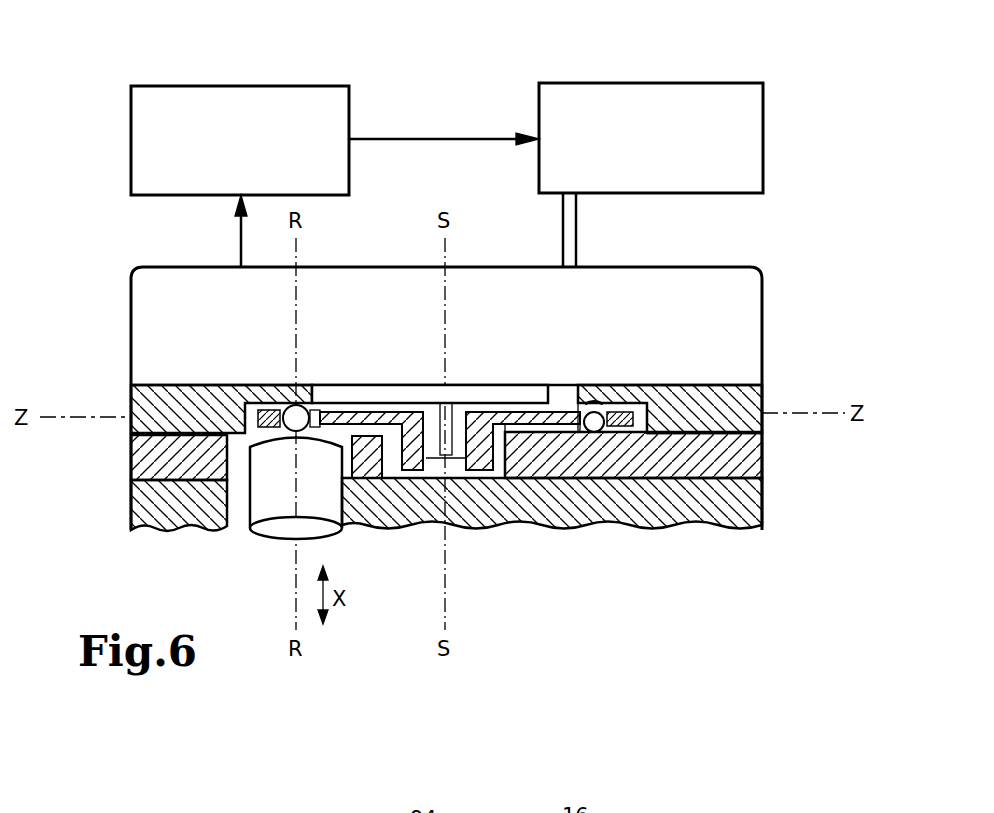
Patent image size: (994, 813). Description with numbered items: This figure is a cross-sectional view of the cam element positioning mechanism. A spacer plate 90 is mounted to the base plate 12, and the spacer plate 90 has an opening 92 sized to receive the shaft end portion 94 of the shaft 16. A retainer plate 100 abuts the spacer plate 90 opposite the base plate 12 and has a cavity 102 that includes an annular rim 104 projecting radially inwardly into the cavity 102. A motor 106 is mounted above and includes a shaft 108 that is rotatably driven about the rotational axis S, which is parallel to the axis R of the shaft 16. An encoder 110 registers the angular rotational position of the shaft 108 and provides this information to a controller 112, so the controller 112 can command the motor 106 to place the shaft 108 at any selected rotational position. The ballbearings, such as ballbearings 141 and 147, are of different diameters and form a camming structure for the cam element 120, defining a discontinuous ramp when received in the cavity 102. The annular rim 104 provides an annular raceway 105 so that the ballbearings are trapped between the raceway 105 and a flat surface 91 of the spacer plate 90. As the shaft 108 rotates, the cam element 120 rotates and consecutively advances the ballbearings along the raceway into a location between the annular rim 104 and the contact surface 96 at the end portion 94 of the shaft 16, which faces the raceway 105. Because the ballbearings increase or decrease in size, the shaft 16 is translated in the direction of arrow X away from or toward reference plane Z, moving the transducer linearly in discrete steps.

The encoder 110 is at (253, 105).
The controller 112 is at (668, 97).
The motor 106 is at (172, 300).
The annular rim 104 is at (267, 386).
The annular raceway 105 is at (305, 408).
The ballbearing 147 is at (332, 412).
The contact surface 96 is at (382, 397).
The cam element 120 is at (492, 406).
The shaft 108 is at (452, 455).
The ballbearing 141 is at (600, 434).
The spacer plate 90 is at (745, 458).
The cavity 102 is at (559, 432).
The retainer plate 100 is at (766, 428).
The flat surface 91 is at (722, 412).
The opening 92 is at (245, 465).
The base plate 12 is at (748, 507).
The shaft end portion 94 is at (340, 492).
The shaft 16 is at (268, 518).